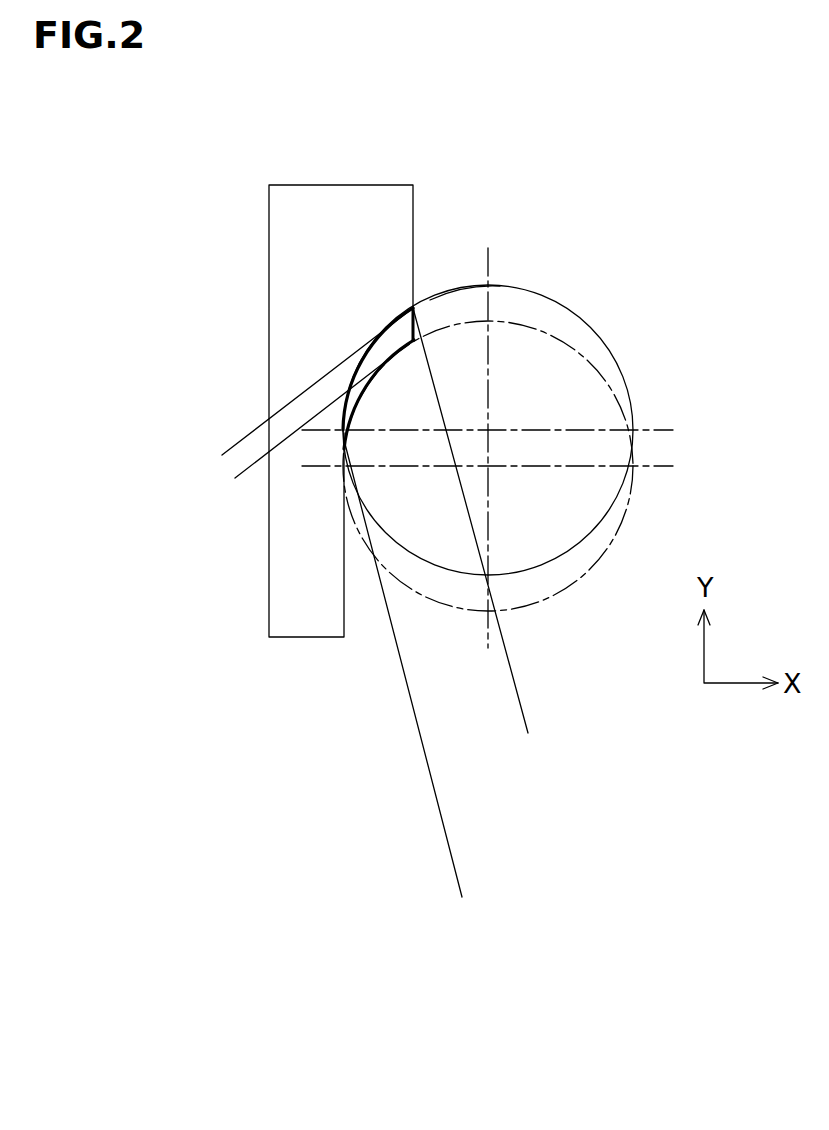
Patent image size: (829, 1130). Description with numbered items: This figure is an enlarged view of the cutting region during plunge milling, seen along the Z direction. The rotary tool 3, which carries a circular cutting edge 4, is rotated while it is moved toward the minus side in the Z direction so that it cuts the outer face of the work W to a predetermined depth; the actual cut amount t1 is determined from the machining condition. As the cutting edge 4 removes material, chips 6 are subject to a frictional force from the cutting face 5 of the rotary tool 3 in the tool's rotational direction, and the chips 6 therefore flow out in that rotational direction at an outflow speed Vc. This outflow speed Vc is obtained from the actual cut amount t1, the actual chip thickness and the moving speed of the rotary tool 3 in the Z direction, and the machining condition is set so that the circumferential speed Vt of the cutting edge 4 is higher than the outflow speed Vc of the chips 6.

The rotary tool 3 is at (517, 287).
The circular cutting edge 4 is at (455, 287).
The cutting face 5 is at (567, 523).
The chips 6 is at (393, 338).
The work W is at (336, 200).
The actual cut amount t1 is at (300, 495).
The circumferential speed of the cutting edge Vt is at (640, 535).
The outflow speed of the chips Vc is at (445, 630).